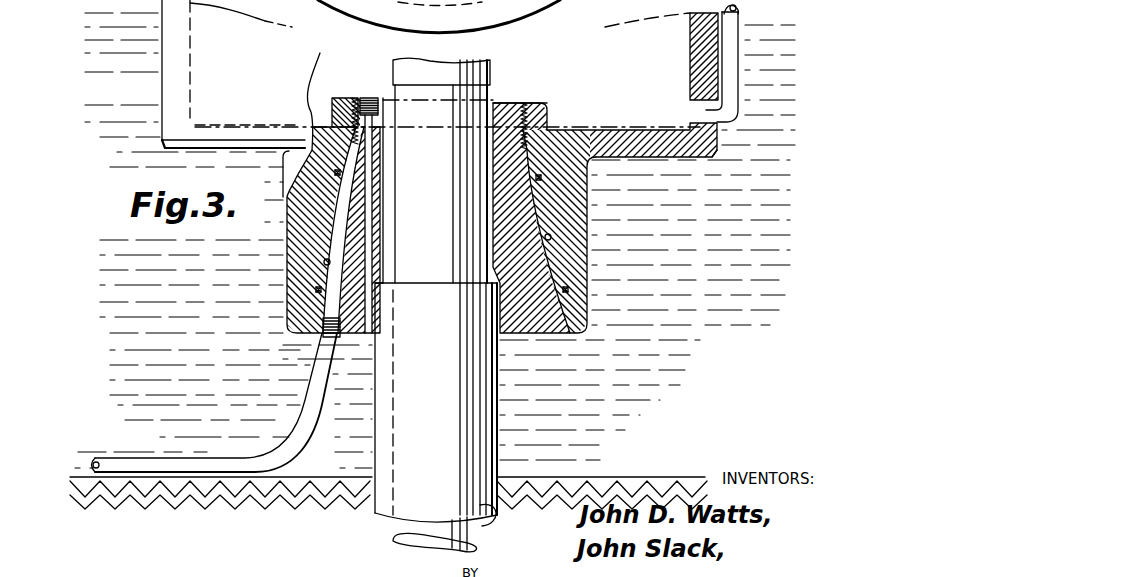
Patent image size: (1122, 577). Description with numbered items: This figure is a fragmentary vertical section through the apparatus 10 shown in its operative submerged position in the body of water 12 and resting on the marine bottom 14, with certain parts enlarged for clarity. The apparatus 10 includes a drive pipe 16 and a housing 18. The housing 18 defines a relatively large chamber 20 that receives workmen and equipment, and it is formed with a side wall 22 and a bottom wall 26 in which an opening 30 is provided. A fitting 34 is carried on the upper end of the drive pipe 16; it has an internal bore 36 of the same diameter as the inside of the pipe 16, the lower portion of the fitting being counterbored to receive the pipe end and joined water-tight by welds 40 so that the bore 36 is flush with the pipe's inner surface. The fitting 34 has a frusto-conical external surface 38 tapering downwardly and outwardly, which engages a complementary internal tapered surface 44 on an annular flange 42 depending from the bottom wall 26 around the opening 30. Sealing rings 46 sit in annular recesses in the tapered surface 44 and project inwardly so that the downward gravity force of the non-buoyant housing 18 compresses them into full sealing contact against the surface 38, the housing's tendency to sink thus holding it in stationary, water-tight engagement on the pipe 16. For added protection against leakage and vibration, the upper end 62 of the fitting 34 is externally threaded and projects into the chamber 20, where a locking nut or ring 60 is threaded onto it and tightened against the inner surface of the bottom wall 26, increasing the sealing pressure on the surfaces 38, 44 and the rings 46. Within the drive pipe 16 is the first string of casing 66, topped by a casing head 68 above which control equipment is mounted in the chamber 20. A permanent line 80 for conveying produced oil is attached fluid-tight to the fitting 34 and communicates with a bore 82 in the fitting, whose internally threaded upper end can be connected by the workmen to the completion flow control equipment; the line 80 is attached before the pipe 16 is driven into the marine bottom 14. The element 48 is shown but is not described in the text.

The apparatus 10 is at (148, 82).
The body of water 12 is at (803, 281).
The marine bottom 14 is at (268, 478).
The drive pipe 16 is at (428, 437).
The housing 18 is at (720, 160).
The chamber 20 is at (640, 87).
The side wall 22 is at (190, 57).
The bottom wall 26 is at (233, 126).
The opening 30 is at (550, 129).
The fitting 34 is at (362, 338).
The internal bore 36 is at (384, 231).
The tapering external surface 38 is at (330, 237).
The welds 40 is at (378, 286).
The annular flange 42 is at (293, 331).
The internal tapered surface 44 is at (325, 262).
The sealing rings 46 is at (341, 172).
The hook 48 is at (737, 14).
The locking nut or ring 60 is at (538, 102).
The upper end of fitting 62 is at (505, 103).
The first string of casing 66 is at (458, 173).
The casing head 68 is at (393, 73).
The permanent line 80 is at (135, 458).
The bore 82 is at (346, 97).